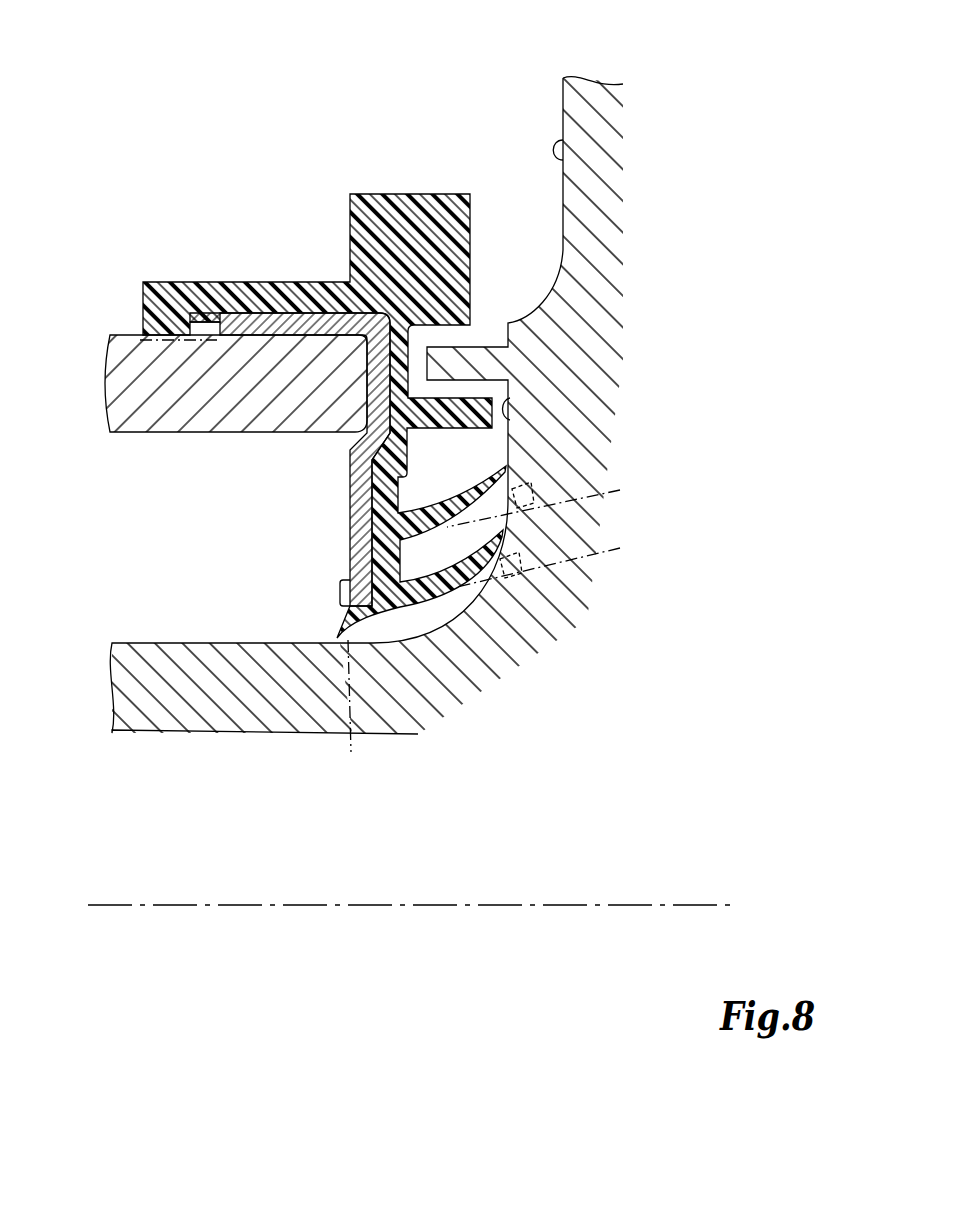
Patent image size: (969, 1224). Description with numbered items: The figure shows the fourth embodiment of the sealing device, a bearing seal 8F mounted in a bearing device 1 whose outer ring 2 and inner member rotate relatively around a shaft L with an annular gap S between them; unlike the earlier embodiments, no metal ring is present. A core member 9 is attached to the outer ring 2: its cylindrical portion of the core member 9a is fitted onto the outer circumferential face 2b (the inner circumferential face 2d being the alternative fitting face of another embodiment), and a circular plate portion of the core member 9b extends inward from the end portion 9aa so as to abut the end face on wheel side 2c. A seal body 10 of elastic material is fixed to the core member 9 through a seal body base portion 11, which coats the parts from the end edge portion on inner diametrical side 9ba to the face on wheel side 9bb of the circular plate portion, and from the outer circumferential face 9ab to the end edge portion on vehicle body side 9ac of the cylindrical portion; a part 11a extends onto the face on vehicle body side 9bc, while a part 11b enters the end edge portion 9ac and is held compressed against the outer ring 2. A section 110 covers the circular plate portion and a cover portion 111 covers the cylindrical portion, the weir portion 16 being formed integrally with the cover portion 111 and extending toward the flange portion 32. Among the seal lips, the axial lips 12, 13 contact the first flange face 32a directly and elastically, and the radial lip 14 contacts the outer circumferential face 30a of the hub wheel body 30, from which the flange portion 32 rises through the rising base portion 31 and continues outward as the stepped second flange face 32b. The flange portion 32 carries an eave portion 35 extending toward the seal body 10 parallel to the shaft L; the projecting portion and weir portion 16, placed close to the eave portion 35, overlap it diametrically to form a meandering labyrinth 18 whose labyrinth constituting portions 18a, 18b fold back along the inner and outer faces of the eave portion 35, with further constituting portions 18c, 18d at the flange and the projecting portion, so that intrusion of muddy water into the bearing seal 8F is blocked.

The bearing device 1 is at (371, 74).
The outer ring 2 is at (133, 420).
The outer circumferential face 2b is at (232, 330).
The end face on wheel side 2c is at (364, 420).
The inner circumferential face 2d is at (153, 432).
The core member 9 is at (215, 462).
The cylindrical portion of the core member 9a is at (277, 333).
The end portion on flange portion side 9aa is at (347, 253).
The outer circumferential face 9ab is at (293, 310).
The end edge portion on vehicle body side 9ac is at (178, 317).
The circular plate portion of the core member 9b is at (345, 517).
The end edge portion on inner diametrical side 9ba is at (347, 623).
The face on wheel side 9bb is at (380, 515).
The face on vehicle body side 9bc is at (345, 548).
The seal body 10 is at (425, 472).
The seal body base portion 11 is at (412, 449).
The part of the seal base portion 11a is at (338, 583).
The part of the seal base portion 11b is at (207, 327).
The section covering the circular plate portion 110 is at (383, 500).
The cover portion 111 is at (258, 297).
The seal lip 12 is at (507, 473).
The seal lip 13 is at (510, 538).
The seal lip 14 is at (338, 643).
The weir portion 16 is at (448, 213).
The labyrinth 18 is at (414, 326).
The first labyrinth constituting portion 18a is at (462, 337).
The second labyrinth constituting portion 18b is at (460, 390).
The third labyrinth constituting portion 18c is at (490, 320).
The fourth labyrinth constituting portion 18d is at (510, 437).
The hub wheel body 30 is at (153, 678).
The outer circumferential face 30a is at (230, 668).
The rising base portion 31 is at (527, 665).
The flange portion 32 is at (572, 130).
The first flange face 32a is at (507, 405).
The second flange face 32b is at (565, 148).
The eave portion 35 is at (445, 356).
The bearing seal 8F is at (322, 560).
The annular gap S is at (130, 550).
The shaft L is at (690, 900).